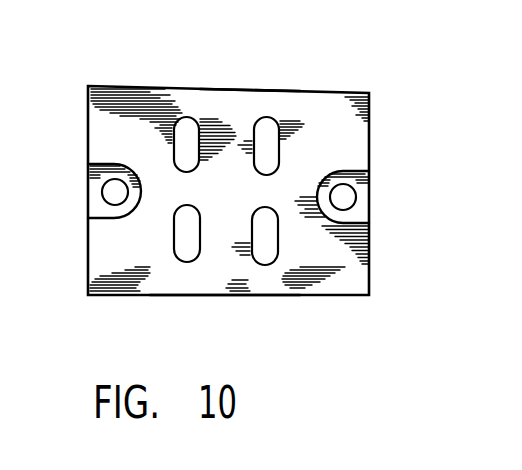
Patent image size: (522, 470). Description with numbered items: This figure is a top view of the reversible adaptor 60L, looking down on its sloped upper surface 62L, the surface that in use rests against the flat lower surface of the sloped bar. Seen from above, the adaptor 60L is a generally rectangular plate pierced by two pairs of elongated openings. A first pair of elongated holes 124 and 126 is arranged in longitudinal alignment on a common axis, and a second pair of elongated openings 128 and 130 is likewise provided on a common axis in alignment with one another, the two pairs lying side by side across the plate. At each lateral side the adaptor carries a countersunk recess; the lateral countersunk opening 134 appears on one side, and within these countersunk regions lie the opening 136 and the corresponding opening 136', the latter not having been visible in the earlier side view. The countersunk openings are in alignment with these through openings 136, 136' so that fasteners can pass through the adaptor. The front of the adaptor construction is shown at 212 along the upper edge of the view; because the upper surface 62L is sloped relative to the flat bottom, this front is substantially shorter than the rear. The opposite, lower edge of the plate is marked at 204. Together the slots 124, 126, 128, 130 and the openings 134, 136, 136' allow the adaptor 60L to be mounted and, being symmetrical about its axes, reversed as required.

The adaptor 60L is at (347, 127).
The sloped upper surface 62L is at (223, 105).
The elongated hole 124 is at (267, 258).
The elongated hole 126 is at (270, 127).
The elongated opening 128 is at (189, 118).
The elongated opening 130 is at (188, 255).
The lateral countersunk opening 134 is at (95, 173).
The opening 136 is at (225, 204).
The corresponding opening 136' is at (371, 197).
The bottom edge of plate 204 is at (222, 295).
The front of the adaptor 212 is at (247, 89).